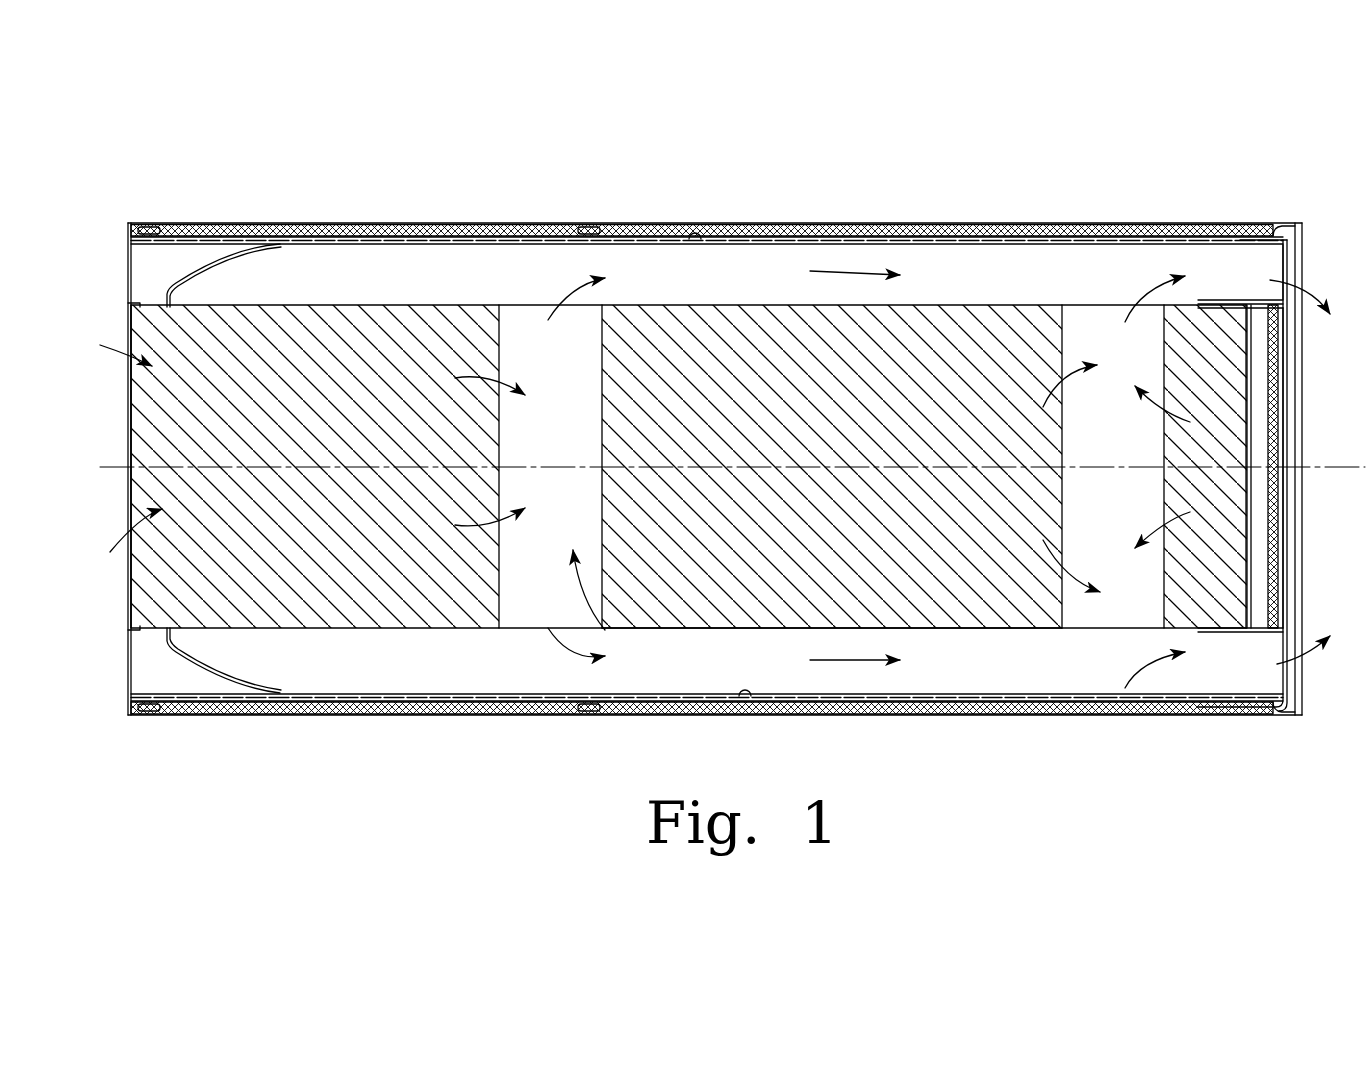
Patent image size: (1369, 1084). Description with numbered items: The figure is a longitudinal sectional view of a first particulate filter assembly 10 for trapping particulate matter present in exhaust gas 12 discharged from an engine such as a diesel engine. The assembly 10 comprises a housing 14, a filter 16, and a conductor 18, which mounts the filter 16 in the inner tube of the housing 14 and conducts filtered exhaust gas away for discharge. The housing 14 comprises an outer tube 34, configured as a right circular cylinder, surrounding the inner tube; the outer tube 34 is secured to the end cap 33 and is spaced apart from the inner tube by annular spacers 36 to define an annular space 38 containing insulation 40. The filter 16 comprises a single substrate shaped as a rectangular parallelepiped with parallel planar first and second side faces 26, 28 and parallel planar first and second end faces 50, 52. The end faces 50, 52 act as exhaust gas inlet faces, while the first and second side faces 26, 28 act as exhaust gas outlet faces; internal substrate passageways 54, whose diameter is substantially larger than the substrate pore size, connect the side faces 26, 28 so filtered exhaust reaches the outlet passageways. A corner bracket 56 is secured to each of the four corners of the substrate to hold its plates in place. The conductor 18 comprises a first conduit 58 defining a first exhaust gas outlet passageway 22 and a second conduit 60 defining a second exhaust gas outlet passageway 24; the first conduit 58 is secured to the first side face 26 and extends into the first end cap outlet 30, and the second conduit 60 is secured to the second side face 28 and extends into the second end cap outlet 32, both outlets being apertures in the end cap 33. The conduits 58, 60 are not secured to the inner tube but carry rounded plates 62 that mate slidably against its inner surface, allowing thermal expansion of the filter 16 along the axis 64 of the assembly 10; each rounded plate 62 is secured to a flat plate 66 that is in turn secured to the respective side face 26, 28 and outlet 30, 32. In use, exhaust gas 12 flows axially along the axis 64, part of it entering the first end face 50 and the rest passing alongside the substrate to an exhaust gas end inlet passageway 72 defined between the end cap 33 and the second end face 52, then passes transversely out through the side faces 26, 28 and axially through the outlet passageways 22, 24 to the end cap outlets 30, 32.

The particulate filter assembly 10 is at (274, 136).
The exhaust gas 12 is at (820, 272).
The housing 14 is at (378, 724).
The filter 16 is at (457, 286).
The conductor 18 is at (181, 672).
The first exhaust gas outlet passageway 22 is at (695, 237).
The second exhaust gas outlet passageway 24 is at (745, 698).
The first side face 26 is at (638, 305).
The second side face 28 is at (655, 632).
The first end cap outlet 30 is at (1292, 300).
The second end cap outlet 32 is at (1285, 632).
The end cap 33 is at (1290, 500).
The outer tube 34 is at (858, 223).
The annular spacers 36 is at (143, 222).
The annular space 38 is at (328, 240).
The insulation 40 is at (395, 244).
The first end face 50 is at (128, 484).
The second end face 52 is at (1260, 446).
The substrate passageways 54 is at (500, 456).
The corner bracket 56 is at (131, 322).
The first conduit 58 is at (204, 262).
The second conduit 60 is at (206, 674).
The rounded plates 62 is at (1095, 245).
The axis 64 is at (541, 481).
The flat plate 66 is at (1240, 302).
The exhaust gas end inlet passageway 72 is at (1262, 572).